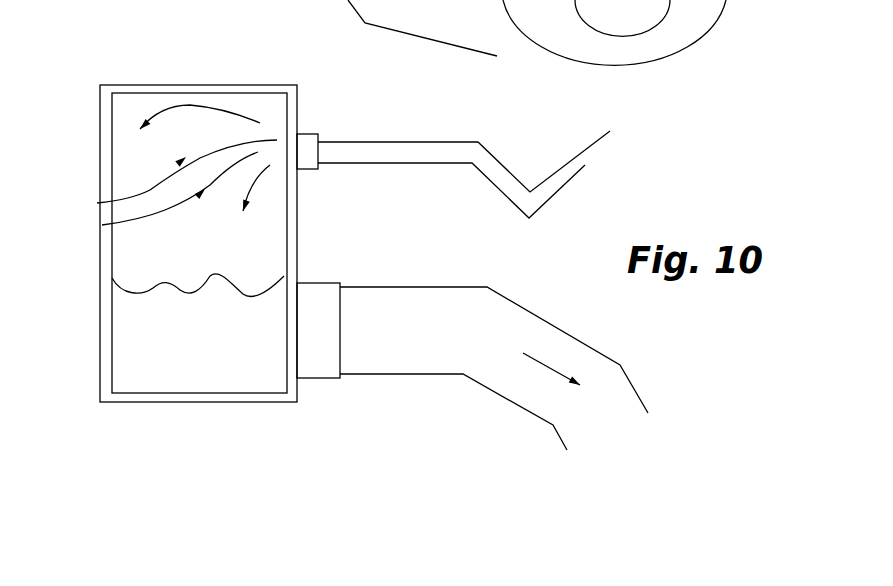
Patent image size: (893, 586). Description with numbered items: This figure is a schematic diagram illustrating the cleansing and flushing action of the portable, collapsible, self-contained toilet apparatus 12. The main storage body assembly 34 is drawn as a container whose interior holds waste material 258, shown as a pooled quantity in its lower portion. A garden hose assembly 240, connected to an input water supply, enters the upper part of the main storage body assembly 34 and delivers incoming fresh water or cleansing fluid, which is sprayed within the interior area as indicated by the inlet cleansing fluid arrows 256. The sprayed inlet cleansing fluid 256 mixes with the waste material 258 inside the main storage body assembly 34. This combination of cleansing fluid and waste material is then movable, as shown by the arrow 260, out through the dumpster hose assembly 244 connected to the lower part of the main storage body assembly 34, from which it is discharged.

The cooling device 12 is at (338, 113).
The main storage body assembly 34 is at (166, 82).
The garden hose assembly 240 is at (447, 146).
The dumpster hose assembly 244 is at (372, 286).
The inlet cleansing fluid 256 is at (102, 225).
The waste material 258 is at (152, 343).
The arrow 260 is at (545, 362).